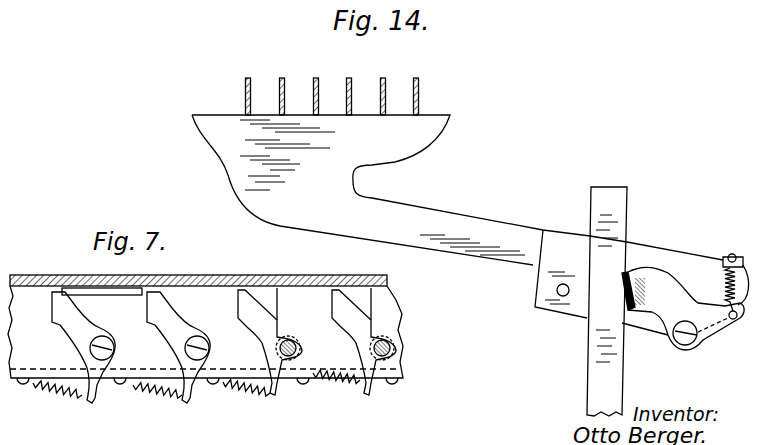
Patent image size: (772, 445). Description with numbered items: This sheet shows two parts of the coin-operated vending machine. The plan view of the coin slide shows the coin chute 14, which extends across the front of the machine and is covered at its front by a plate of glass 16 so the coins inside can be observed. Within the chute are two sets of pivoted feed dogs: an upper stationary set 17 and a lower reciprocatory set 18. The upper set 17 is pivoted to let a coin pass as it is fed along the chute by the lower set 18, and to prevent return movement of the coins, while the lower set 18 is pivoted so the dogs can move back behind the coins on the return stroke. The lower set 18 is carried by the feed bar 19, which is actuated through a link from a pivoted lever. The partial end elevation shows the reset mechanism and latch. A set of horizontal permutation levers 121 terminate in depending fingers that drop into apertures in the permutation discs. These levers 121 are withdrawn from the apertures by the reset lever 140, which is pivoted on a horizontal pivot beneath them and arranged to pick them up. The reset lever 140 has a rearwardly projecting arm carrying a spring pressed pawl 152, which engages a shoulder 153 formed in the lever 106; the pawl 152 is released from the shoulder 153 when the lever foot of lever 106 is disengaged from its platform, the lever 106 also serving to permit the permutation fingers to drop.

In FIG. 7, the coin chute 14 is at (150, 355).
In FIG. 7, the plate of glass 16 is at (209, 281).
In FIG. 7, the upper stationary set of feed dogs 17 is at (333, 312).
In FIG. 7, the lower reciprocatory set of feed dogs 18 is at (147, 313).
In FIG. 7, the feed bar 19 is at (230, 357).
In FIG. 14, the lever 106 is at (620, 208).
In FIG. 14, the horizontal permutation levers 121 is at (416, 78).
In FIG. 14, the reset lever 140 is at (418, 210).
In FIG. 14, the spring pressed pawl 152 is at (660, 285).
In FIG. 14, the shoulder 153 is at (627, 270).